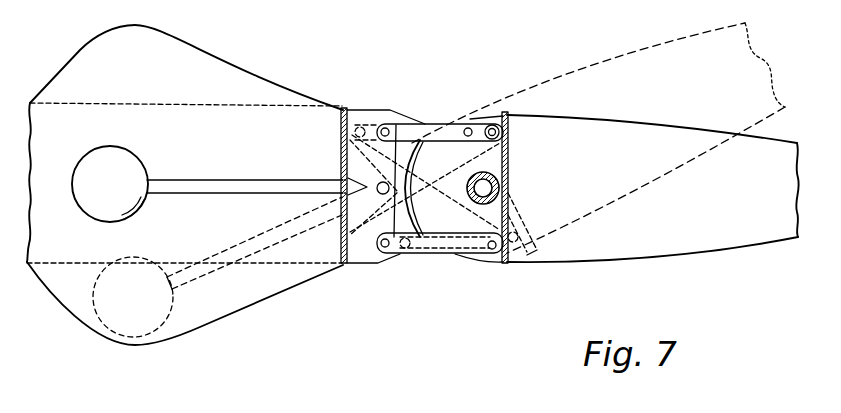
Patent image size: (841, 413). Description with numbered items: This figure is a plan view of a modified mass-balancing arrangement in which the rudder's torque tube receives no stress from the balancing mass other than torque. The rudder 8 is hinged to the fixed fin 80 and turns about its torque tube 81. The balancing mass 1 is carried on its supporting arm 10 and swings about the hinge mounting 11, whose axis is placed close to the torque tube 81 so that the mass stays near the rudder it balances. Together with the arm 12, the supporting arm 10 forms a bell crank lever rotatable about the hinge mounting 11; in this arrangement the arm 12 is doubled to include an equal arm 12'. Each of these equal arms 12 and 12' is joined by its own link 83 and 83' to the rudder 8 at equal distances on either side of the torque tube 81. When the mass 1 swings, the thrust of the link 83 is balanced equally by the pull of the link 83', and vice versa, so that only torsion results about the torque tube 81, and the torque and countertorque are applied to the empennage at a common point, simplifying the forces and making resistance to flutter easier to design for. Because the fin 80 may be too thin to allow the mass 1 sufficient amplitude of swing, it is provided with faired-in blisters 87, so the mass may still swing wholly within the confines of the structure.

The mass 1 is at (88, 170).
The supporting arm 10 is at (193, 182).
The fixed fin 80 is at (50, 262).
The faired-in blisters 87 is at (205, 327).
The arm 12 is at (366, 216).
The arm 12' is at (348, 175).
The hinge mounting 11 is at (380, 186).
The link 83' is at (440, 148).
The link 83 is at (440, 265).
The torque tube 81 is at (496, 196).
The rudder 8 is at (705, 242).